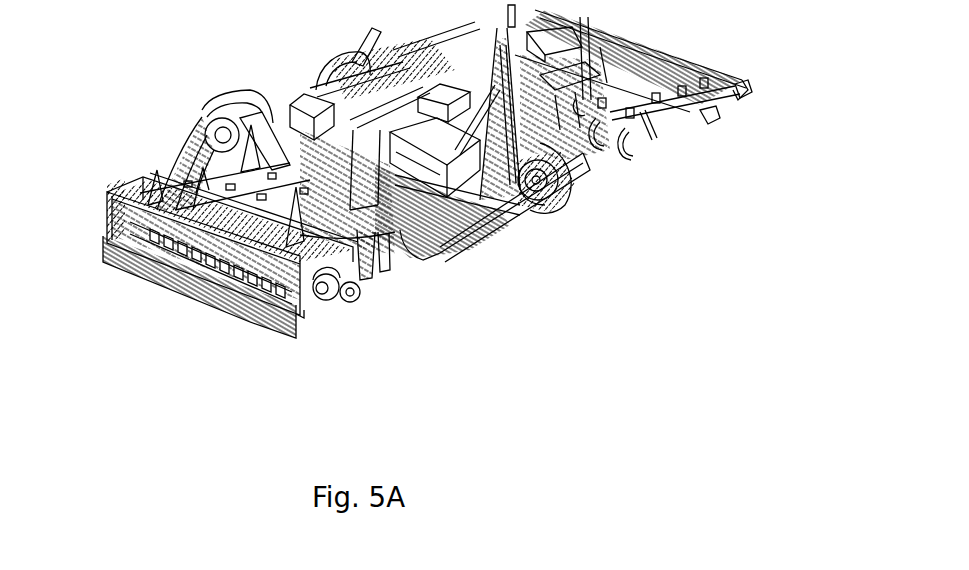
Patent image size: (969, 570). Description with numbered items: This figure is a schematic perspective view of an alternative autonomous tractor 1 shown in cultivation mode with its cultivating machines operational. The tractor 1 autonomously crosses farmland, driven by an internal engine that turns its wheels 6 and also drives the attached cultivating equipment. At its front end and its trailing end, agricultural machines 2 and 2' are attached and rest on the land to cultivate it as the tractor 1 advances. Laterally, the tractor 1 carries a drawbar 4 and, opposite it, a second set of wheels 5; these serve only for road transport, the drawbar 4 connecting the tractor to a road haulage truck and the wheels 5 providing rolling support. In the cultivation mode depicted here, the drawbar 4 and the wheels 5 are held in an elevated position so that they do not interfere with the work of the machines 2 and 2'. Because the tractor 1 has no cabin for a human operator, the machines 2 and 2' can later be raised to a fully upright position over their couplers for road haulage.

The autonomous tractor 1 is at (434, 145).
The agricultural machine 2 is at (231, 288).
The agricultural machine 2' is at (664, 143).
The drawbar 4 is at (573, 160).
The second set of wheels 5 is at (172, 185).
The wheels 6 is at (388, 250).